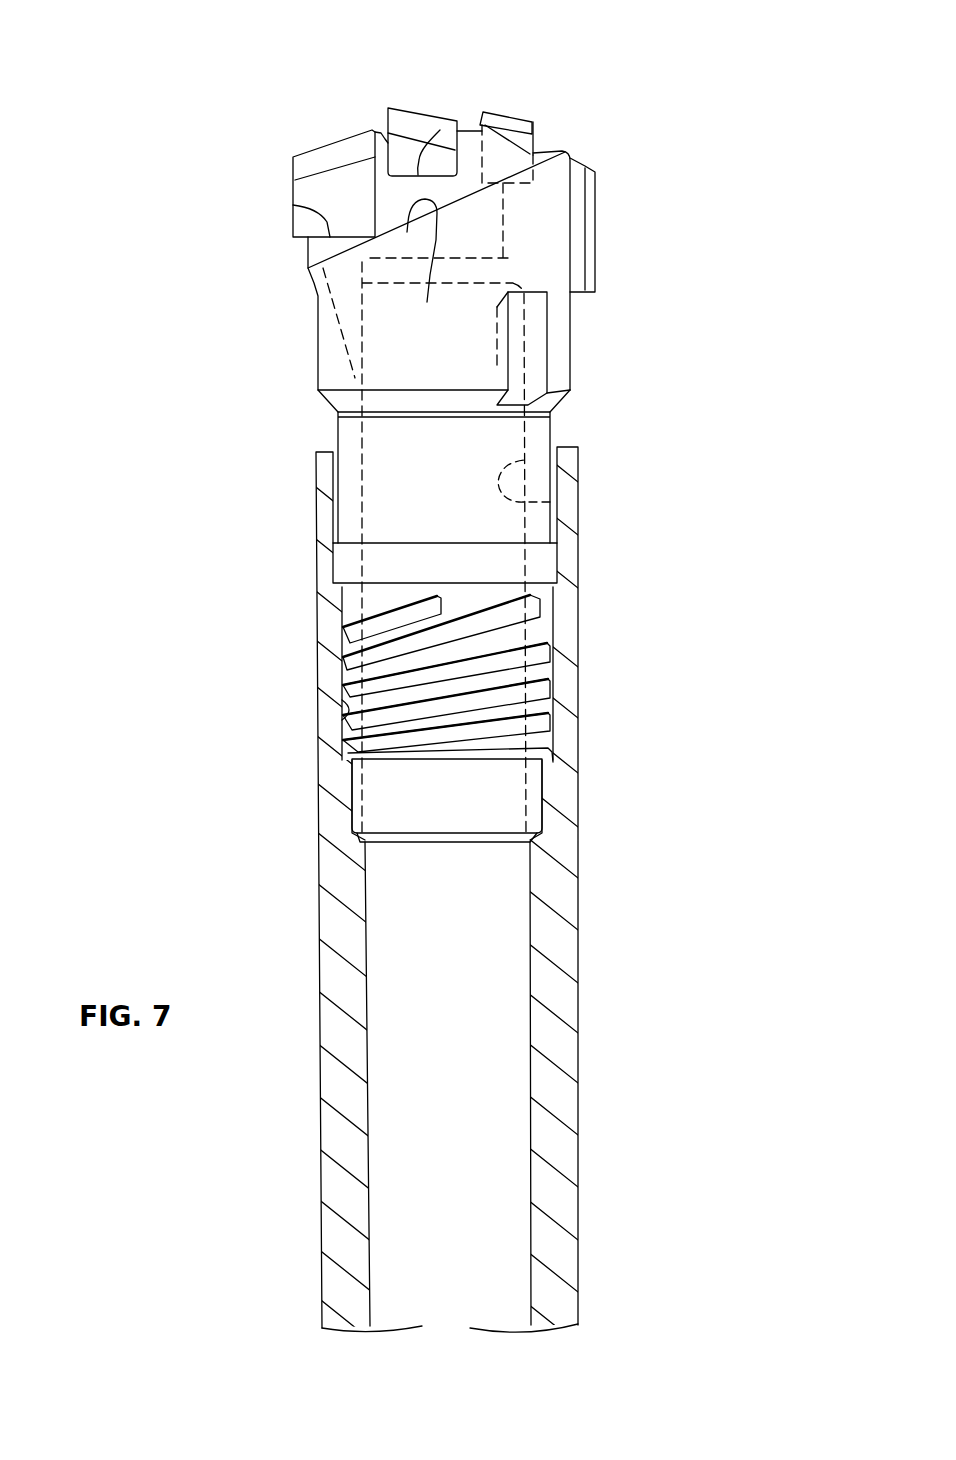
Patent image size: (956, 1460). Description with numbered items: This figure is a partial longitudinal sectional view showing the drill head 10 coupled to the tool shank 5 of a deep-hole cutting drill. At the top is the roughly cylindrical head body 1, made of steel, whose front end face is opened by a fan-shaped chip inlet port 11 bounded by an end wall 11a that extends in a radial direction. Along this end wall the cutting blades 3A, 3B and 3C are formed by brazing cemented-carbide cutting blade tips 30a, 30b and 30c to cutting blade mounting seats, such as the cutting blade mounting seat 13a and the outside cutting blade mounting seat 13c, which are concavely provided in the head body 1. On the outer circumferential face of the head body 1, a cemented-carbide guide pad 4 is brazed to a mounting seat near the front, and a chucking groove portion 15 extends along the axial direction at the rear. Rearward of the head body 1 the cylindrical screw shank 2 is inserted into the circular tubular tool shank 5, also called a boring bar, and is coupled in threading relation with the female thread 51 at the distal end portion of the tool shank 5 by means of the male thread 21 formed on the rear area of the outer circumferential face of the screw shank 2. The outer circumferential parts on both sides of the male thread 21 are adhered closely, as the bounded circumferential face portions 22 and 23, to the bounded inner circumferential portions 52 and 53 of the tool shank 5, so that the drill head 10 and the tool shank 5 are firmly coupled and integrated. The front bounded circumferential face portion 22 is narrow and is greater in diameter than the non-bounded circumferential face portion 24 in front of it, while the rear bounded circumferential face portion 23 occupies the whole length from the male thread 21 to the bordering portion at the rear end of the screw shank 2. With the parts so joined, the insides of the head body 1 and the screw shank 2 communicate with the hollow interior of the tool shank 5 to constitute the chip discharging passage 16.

The head body 1 is at (306, 317).
The drill head 10 is at (294, 348).
The chip inlet port 11 is at (431, 266).
The end wall 11a is at (380, 200).
The cutting blade 3A is at (410, 104).
The cutting blade 3B is at (513, 112).
The cutting blade 3C is at (322, 147).
The cutting blade tip 30a is at (398, 117).
The cutting blade tip 30b is at (532, 122).
The cutting blade tip 30c is at (310, 187).
The cutting blade mounting seat 13a is at (440, 130).
The outside cutting blade mounting seat 13c is at (293, 197).
The guide pad 4 is at (597, 220).
The chucking groove portion 15 is at (527, 358).
The screw shank 2 is at (320, 505).
The non-bounded circumferential face portion 24 is at (372, 460).
The bounded circumferential face portion 22 is at (345, 565).
The male thread 21 is at (545, 652).
The bounded circumferential face portion 23 is at (378, 795).
The female thread 51 is at (342, 710).
The bounded inner circumferential portion 52 is at (558, 567).
The bounded inner circumferential portion 53 is at (541, 806).
The tool shank 5 is at (590, 990).
The chip discharging passage 16 is at (562, 499).